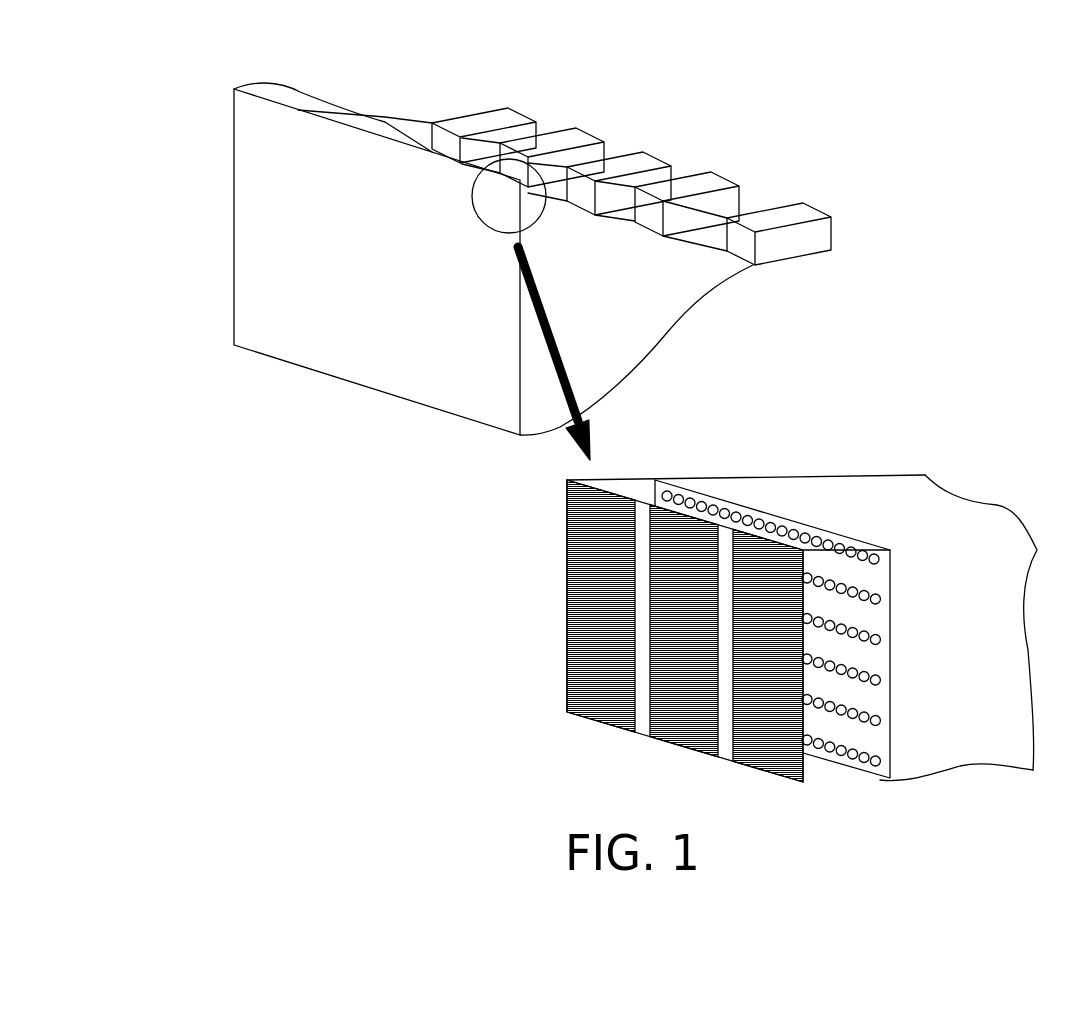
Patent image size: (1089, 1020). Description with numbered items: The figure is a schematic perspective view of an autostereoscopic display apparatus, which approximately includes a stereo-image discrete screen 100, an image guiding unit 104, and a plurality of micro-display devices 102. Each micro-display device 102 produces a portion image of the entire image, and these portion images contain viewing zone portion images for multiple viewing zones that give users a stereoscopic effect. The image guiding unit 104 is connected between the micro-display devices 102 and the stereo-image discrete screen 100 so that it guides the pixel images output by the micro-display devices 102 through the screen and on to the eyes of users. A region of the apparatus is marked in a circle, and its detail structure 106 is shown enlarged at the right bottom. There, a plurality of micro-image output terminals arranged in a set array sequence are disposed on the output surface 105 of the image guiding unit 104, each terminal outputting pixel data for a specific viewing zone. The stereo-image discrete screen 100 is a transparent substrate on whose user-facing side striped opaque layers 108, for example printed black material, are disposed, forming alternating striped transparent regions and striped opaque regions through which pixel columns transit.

The stereo-image discrete screen 100 is at (250, 203).
The micro-display device 102 is at (830, 238).
The image guiding unit 104 is at (650, 353).
The output surface 105 is at (893, 751).
The detail structure 106 is at (760, 585).
The striped opaque layer 108 is at (568, 658).